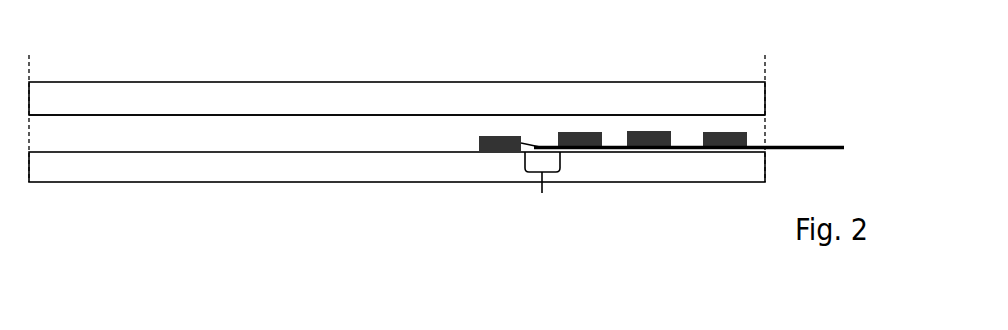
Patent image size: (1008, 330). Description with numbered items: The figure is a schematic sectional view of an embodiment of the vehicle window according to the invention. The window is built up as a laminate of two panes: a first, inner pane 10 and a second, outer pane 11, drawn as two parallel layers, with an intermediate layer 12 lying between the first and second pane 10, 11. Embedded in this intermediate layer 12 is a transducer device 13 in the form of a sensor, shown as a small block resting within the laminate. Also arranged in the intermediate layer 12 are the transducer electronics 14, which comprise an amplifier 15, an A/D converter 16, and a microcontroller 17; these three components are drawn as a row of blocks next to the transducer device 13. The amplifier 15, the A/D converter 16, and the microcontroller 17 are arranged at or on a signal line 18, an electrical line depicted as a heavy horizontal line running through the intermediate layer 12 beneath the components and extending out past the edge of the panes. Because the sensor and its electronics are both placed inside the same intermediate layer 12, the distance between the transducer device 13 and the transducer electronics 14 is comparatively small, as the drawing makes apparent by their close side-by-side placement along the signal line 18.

The first pane 10 is at (330, 172).
The second pane 11 is at (86, 97).
The intermediate layer 12 is at (215, 135).
The transducer device 13 is at (477, 140).
The transducer electronics 14 is at (648, 162).
The amplifier 15 is at (580, 128).
The A/D converter 16 is at (649, 128).
The microcontroller 17 is at (727, 128).
The signal line 18 is at (797, 142).